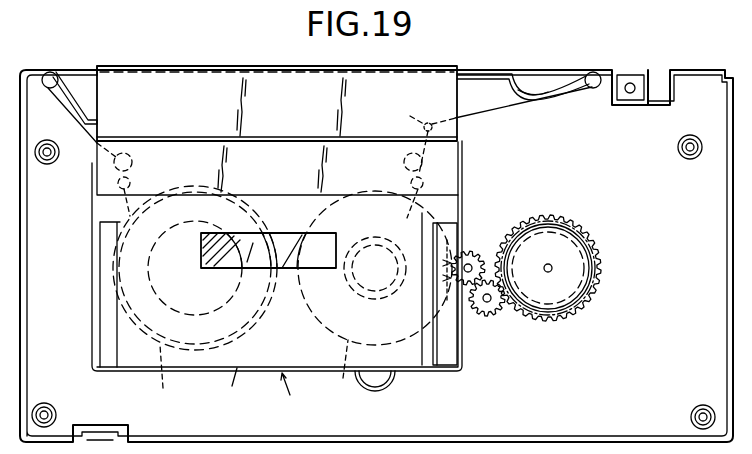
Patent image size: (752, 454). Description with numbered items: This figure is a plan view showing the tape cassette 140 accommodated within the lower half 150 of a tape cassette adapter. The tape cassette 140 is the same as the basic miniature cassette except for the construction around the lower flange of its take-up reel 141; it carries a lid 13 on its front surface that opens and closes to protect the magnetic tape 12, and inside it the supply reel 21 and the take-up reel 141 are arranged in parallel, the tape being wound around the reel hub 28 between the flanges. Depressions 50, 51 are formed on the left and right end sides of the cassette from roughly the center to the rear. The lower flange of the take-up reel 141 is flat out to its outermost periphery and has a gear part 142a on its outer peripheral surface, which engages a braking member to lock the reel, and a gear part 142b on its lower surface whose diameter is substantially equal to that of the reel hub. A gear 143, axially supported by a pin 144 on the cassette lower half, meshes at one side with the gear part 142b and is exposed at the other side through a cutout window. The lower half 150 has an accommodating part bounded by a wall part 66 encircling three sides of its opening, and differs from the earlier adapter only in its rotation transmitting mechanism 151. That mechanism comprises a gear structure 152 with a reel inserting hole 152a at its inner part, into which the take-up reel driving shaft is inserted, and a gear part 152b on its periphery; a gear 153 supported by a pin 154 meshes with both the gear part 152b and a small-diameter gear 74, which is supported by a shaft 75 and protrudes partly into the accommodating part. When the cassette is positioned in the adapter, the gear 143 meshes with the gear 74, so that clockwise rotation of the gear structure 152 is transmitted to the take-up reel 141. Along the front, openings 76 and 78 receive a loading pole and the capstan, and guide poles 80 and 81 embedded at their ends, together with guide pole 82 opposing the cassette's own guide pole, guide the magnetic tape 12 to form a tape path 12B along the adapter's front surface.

The magnetic tape 12 is at (63, 113).
The tape path 12B is at (527, 70).
The lid 13 is at (289, 77).
The supply reel 21 is at (162, 375).
The reel hub 28 is at (345, 284).
The depression 50 is at (103, 325).
The depression 51 is at (447, 347).
The wall part 66 is at (222, 390).
The gear 74 is at (465, 252).
The shaft 75 is at (472, 264).
The opening 76 is at (90, 82).
The opening 78 is at (536, 88).
The guide pole 80 is at (48, 72).
The guide pole 81 is at (595, 72).
The guide pole 82 is at (421, 137).
The tape cassette 140 is at (297, 396).
The take-up reel 141 is at (345, 368).
The gear part 142a is at (322, 330).
The gear part 142b is at (322, 205).
The gear 143 is at (378, 300).
The pin 144 is at (396, 268).
The lower half 150 is at (210, 52).
The rotation transmitting mechanism 151 is at (593, 223).
The gear structure 152 is at (542, 224).
The reel inserting hole 152a is at (581, 258).
The gear part 152b is at (539, 320).
The gear 153 is at (499, 313).
The pin 154 is at (486, 316).